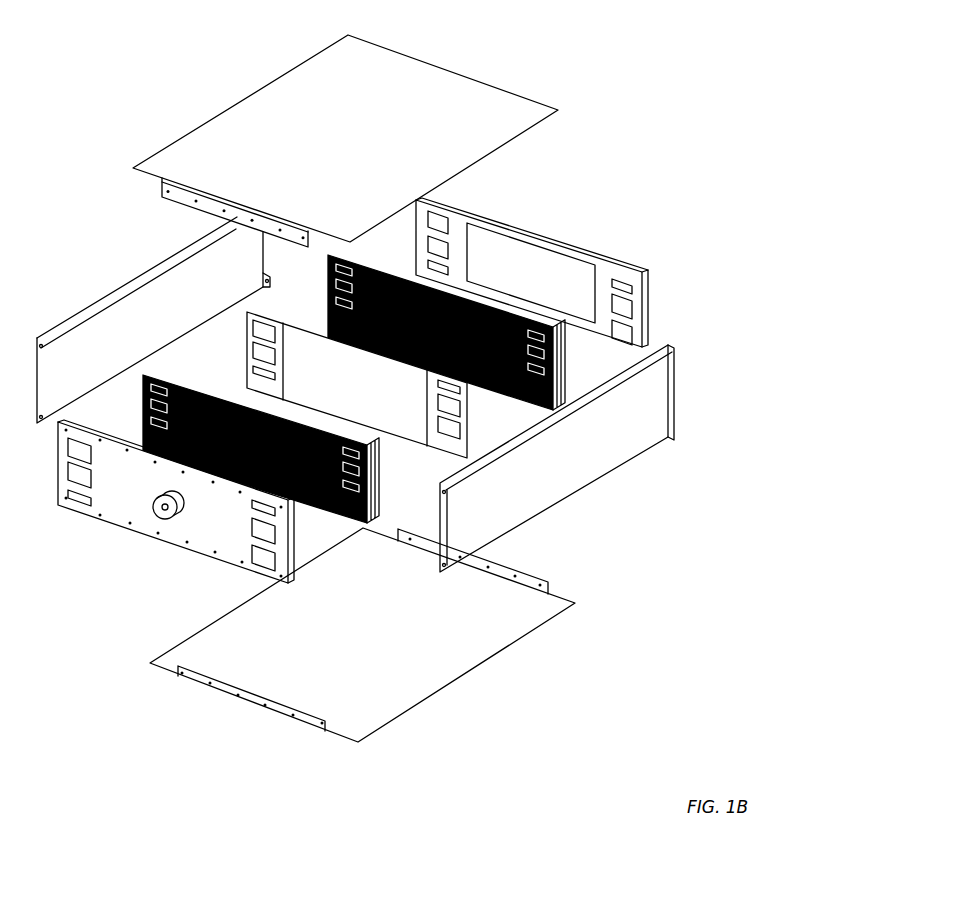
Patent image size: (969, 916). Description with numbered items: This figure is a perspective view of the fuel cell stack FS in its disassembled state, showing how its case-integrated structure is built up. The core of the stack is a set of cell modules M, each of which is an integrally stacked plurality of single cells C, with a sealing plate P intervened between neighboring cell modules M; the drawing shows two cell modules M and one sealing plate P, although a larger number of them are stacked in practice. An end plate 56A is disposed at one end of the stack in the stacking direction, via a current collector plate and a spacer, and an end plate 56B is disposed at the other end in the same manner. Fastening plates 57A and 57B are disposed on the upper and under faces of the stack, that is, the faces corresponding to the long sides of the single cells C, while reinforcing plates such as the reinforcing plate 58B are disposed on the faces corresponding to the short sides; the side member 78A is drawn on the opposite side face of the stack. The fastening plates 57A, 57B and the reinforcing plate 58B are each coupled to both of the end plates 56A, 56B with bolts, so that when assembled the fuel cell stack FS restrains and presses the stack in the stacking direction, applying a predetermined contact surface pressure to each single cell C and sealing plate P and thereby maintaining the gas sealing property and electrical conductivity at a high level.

The fuel cell stack FS is at (360, 376).
The fastening plate 57A is at (237, 118).
The fastening plate 57B is at (458, 647).
The end plate 56A is at (578, 252).
The end plate 56B is at (117, 500).
The side plate 78A is at (130, 283).
The reinforcing plate 58B is at (588, 465).
The single cell C is at (472, 300).
The cell module M is at (558, 370).
The sealing plate P is at (396, 403).